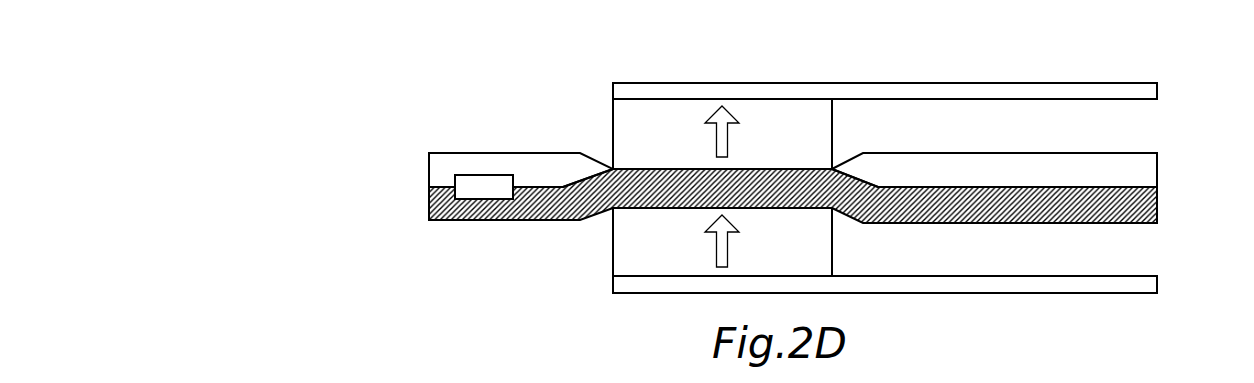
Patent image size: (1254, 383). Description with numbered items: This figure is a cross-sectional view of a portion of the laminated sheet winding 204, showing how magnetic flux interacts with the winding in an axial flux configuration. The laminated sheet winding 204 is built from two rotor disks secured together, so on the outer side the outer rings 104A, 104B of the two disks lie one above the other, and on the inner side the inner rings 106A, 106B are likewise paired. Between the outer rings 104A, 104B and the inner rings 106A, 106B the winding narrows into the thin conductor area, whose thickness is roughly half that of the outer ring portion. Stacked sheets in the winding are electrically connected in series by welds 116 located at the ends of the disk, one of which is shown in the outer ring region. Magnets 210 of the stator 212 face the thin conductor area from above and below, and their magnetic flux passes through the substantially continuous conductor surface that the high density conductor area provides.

The laminated sheet winding 204 is at (372, 132).
The outer ring 104A is at (445, 175).
The outer ring 104B is at (429, 200).
The inner ring 106A is at (1132, 170).
The inner ring 106B is at (1145, 205).
The weld 116 is at (480, 183).
The magnet 210 is at (637, 133).
The stator 212 is at (863, 92).